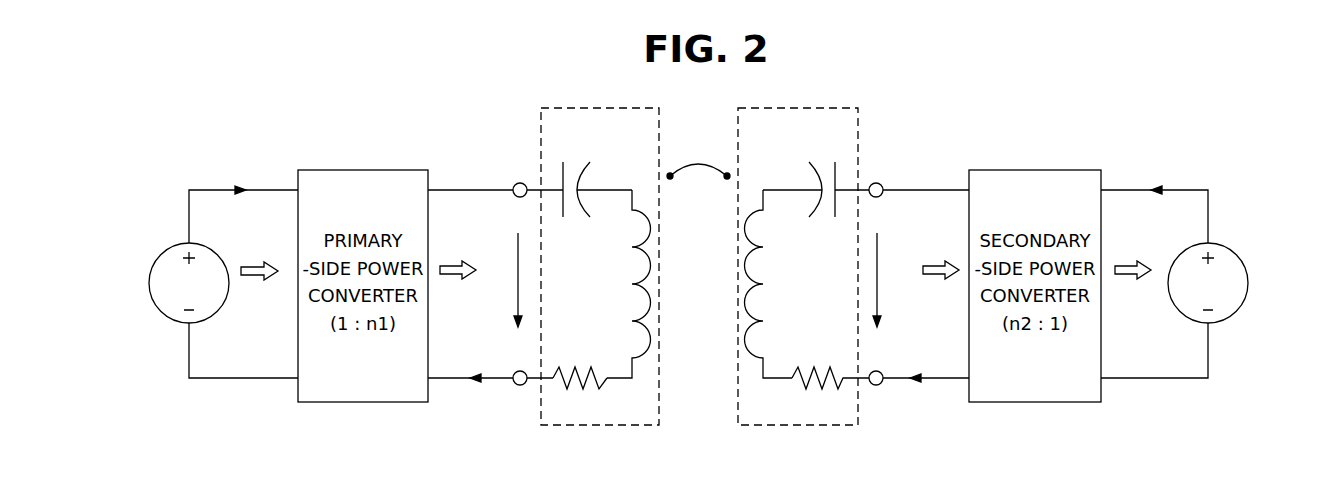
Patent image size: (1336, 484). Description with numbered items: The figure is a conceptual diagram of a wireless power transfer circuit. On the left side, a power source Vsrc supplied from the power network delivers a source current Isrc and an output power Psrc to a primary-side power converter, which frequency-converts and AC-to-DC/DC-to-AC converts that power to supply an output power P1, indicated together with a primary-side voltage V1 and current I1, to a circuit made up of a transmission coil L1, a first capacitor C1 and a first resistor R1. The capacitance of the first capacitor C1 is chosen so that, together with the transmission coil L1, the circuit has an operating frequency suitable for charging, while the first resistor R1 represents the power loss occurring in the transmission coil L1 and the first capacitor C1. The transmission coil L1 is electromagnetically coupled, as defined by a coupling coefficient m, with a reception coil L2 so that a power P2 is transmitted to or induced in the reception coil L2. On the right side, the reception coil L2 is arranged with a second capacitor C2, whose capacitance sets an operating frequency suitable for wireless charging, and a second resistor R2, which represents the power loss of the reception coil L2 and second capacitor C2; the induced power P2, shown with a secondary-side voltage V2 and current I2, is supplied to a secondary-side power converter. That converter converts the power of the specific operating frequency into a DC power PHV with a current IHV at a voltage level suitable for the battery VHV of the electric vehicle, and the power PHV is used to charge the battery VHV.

The power source Vsrc is at (168, 283).
The source current Isrc is at (245, 174).
The output power Psrc is at (259, 255).
The output power P1 is at (458, 256).
The primary-side voltage V1 is at (508, 280).
The primary-side current I1 is at (475, 364).
The first capacitor C1 is at (597, 171).
The transmission coil L1 is at (629, 284).
The first resistor R1 is at (580, 361).
The coupling coefficient m is at (698, 159).
The second capacitor C2 is at (816, 172).
The reception coil L2 is at (769, 284).
The second resistor R2 is at (830, 361).
The secondary-side voltage V2 is at (888, 280).
The secondary-side current I2 is at (913, 364).
The power P2 is at (941, 255).
The electric power PHV is at (1131, 255).
The high-voltage side current IHV is at (1155, 174).
The battery VHV is at (1232, 283).